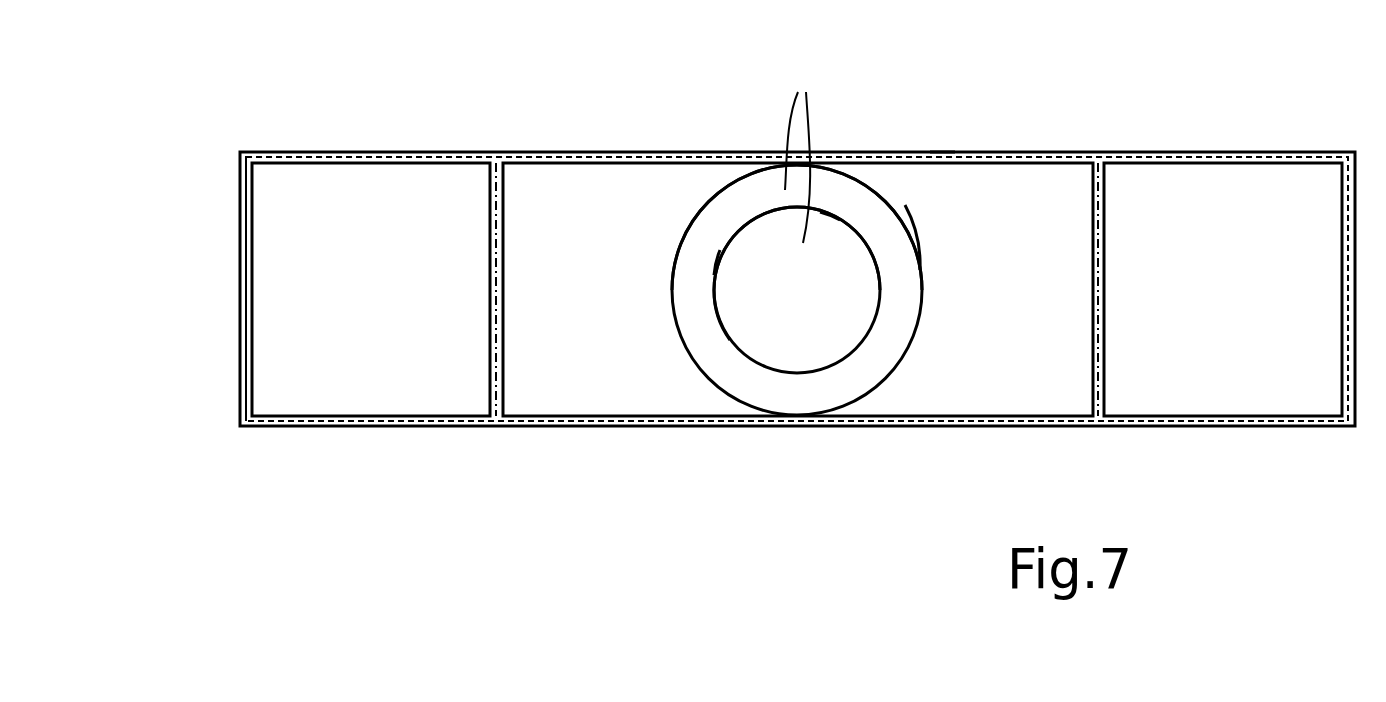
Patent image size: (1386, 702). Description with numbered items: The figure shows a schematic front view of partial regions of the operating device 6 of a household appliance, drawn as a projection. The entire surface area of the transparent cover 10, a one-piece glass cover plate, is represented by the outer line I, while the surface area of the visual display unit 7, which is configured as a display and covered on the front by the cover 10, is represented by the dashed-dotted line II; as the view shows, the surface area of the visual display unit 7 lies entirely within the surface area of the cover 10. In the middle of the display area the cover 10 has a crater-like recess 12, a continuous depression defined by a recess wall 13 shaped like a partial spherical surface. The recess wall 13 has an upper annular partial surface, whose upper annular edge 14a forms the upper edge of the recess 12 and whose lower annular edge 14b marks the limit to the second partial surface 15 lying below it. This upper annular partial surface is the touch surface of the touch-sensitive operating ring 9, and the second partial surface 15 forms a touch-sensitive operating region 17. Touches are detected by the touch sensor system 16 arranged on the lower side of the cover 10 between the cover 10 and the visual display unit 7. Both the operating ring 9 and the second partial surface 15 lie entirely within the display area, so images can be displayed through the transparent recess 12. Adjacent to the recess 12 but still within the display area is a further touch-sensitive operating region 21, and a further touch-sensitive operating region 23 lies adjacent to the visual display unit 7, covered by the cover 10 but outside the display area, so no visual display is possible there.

The operating device 6 is at (940, 112).
The visual display unit 7 is at (612, 350).
The touch-sensitive operating ring 9 is at (720, 338).
The cover 10 is at (1148, 152).
The recess 12 is at (932, 272).
The recess wall 13 is at (728, 222).
The upper annular edge 14a is at (913, 226).
The lower annular edge 14b is at (715, 275).
The second partial surface 15 is at (772, 233).
The touch sensor system 16 is at (803, 150).
The operating region 17 is at (827, 250).
The further touch-sensitive operating region 21 is at (1242, 395).
The touch-sensitive operating region 23 is at (345, 395).
The line I is at (245, 286).
The dashed-dotted line II is at (492, 362).